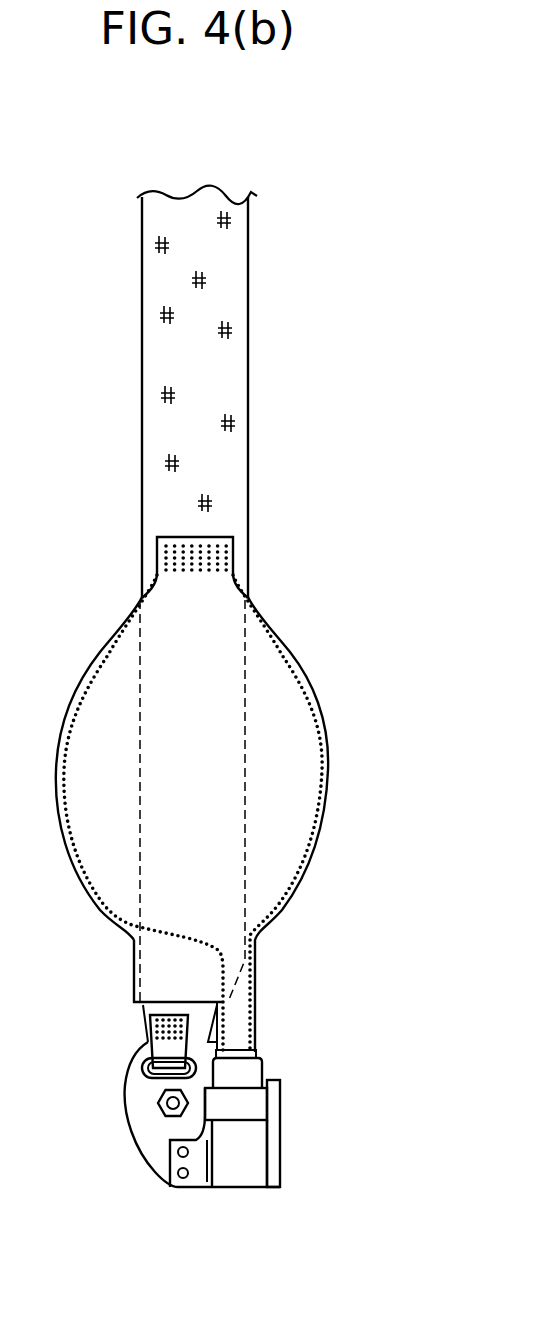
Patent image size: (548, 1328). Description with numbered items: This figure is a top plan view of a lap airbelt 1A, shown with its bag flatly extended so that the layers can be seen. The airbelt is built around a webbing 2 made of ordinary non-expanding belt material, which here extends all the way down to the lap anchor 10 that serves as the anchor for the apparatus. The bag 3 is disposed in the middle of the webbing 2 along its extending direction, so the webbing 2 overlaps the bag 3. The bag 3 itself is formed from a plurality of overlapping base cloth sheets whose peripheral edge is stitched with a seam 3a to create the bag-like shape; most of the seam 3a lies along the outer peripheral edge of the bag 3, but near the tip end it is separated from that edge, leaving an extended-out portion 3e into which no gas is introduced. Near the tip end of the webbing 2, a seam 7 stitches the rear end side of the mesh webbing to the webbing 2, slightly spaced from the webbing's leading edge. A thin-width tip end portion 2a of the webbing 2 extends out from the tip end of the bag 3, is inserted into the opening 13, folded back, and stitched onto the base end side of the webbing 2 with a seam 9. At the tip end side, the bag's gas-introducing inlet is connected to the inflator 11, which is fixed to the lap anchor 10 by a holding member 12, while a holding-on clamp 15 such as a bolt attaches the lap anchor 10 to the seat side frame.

The lap airbelt 1A is at (295, 467).
The webbing 2 is at (233, 353).
The tip end portion 2a is at (147, 1032).
The bag 3 is at (300, 753).
The seam 3a is at (66, 755).
The extended-out portion 3e is at (133, 968).
The seam 7 is at (222, 547).
The seam 9 is at (163, 1015).
The lap anchor 10 is at (158, 1147).
The inflator 11 is at (245, 1068).
The holding member 12 is at (248, 1105).
The opening 13 is at (157, 1079).
The holding-on clamp 15 is at (168, 1102).